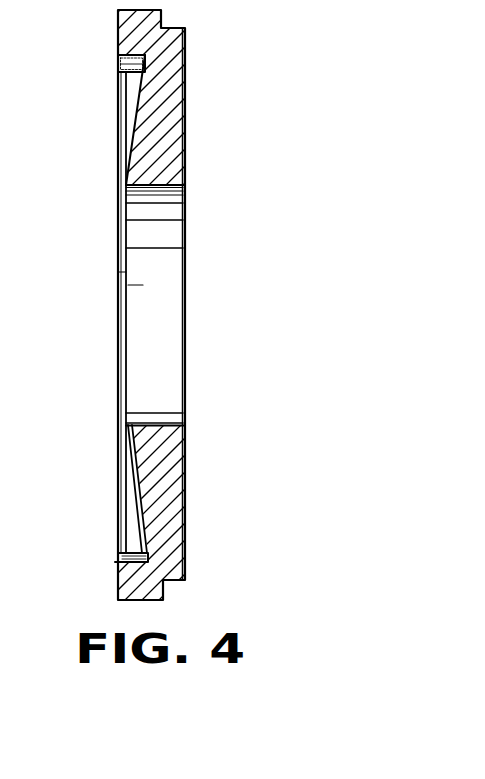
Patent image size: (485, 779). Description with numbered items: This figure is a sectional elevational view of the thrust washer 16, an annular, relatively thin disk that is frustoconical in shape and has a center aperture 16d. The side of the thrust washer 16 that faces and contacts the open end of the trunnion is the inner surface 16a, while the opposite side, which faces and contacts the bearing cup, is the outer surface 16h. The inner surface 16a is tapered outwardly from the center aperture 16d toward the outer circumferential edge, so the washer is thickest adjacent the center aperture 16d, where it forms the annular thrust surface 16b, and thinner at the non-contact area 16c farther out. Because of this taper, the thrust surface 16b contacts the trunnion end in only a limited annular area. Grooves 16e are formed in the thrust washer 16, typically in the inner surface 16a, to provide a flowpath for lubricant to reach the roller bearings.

The thrust washer 16 is at (214, 79).
The inner surface 16a is at (120, 130).
The thrust surface 16b is at (125, 185).
The non-contact area 16c is at (120, 75).
The center aperture 16d is at (168, 188).
The grooves 16e is at (140, 502).
The outer surface 16h is at (187, 128).